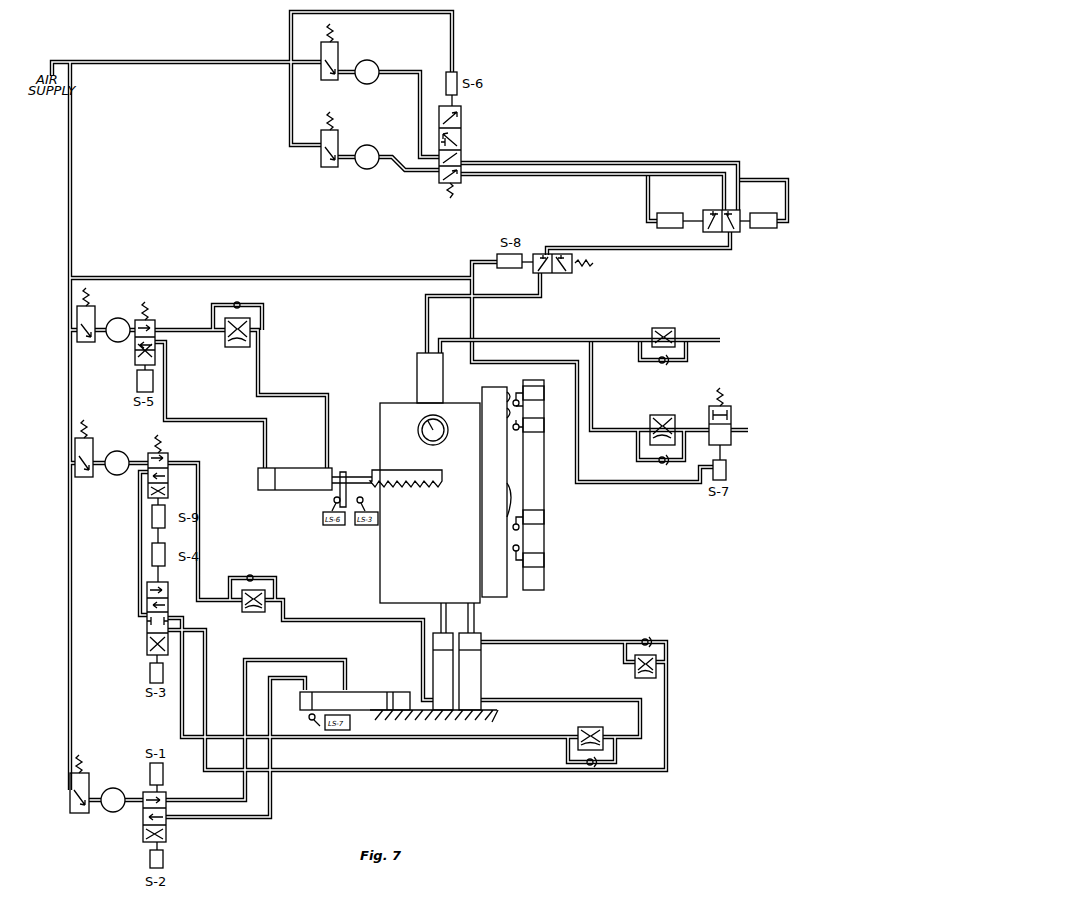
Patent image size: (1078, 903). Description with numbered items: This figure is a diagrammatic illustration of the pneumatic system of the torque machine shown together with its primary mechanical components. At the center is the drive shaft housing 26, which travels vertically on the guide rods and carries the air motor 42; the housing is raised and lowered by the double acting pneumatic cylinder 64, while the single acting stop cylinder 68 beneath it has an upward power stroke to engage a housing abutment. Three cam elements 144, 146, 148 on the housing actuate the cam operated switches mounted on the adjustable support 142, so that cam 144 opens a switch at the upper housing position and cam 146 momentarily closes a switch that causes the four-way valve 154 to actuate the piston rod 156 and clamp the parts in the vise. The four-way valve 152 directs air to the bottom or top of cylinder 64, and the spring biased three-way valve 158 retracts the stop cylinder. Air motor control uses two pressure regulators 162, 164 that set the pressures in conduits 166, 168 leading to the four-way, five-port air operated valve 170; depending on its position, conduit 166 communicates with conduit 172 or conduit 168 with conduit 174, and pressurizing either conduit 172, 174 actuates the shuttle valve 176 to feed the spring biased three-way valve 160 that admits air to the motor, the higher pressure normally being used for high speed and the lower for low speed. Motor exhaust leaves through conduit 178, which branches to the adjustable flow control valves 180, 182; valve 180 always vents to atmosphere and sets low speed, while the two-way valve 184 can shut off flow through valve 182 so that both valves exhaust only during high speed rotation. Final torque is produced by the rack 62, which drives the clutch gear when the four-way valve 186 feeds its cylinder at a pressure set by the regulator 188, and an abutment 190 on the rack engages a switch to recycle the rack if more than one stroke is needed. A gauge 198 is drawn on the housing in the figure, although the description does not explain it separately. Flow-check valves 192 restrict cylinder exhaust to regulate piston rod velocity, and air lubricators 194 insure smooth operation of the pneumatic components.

The drive shaft housing 26 is at (435, 558).
The air motor 42 is at (416, 374).
The rack 62 is at (416, 464).
The pneumatic cylinder 64 is at (483, 680).
The stop cylinder 68 is at (433, 668).
The support 142 is at (554, 472).
The cam element 144 is at (515, 396).
The cam element 146 is at (515, 420).
The cam element 148 is at (512, 500).
The 4-way valve 152 is at (145, 635).
The 4-way valve 154 is at (168, 830).
The piston rod 156 is at (350, 690).
The 3-way valve 158 is at (174, 478).
The 3-way valve 160 is at (570, 275).
The air pressure regulator 162 is at (340, 58).
The air pressure regulator 164 is at (340, 140).
The conduit 166 is at (414, 71).
The conduit 168 is at (392, 165).
The 4-way, 5-port air operated valve 170 is at (463, 136).
The conduit 172 is at (538, 161).
The conduit 174 is at (488, 180).
The shuttle valve 176 is at (737, 234).
The conduit 178 is at (544, 338).
The adjustable flow control valve 180 is at (667, 328).
The adjustable flow control valve 182 is at (672, 414).
The 2-way air operated valve 184 is at (733, 418).
The 4-way valve 186 is at (133, 356).
The regulator 188 is at (97, 312).
The abutment 190 is at (354, 462).
The adjustable flow-check valve 192 is at (267, 325).
The air lubricator 194 is at (372, 86).
The pressure gauge 198 is at (440, 443).